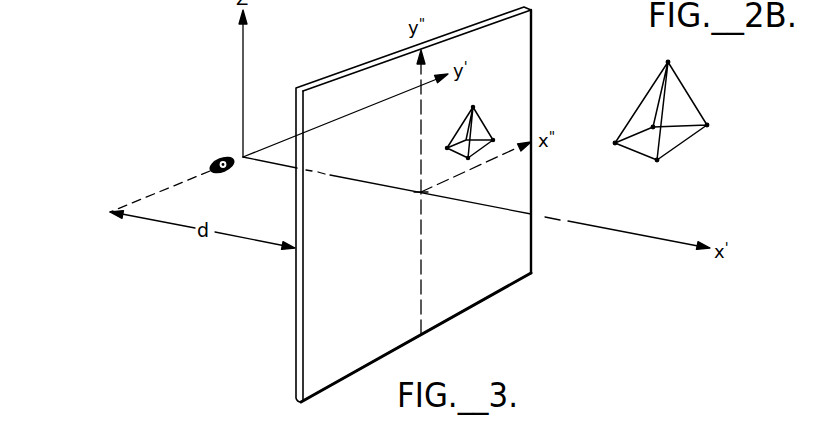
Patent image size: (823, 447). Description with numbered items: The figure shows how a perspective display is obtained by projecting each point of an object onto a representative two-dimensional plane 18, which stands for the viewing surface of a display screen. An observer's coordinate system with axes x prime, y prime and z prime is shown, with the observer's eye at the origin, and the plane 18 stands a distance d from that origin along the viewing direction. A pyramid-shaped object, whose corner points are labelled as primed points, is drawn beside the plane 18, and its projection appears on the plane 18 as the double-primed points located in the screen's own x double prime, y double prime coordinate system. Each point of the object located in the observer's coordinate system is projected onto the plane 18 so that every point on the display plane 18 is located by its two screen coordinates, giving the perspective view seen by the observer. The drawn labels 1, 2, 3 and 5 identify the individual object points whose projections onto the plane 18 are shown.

The two-dimensional plane 18 is at (296, 315).
The object point P1 and its projection 1 is at (493, 140).
The object point P2 and its projection 2 is at (468, 158).
The object point P3 and its projection 3 is at (447, 148).
The object point P5 (apex) and its projection 5 is at (473, 107).